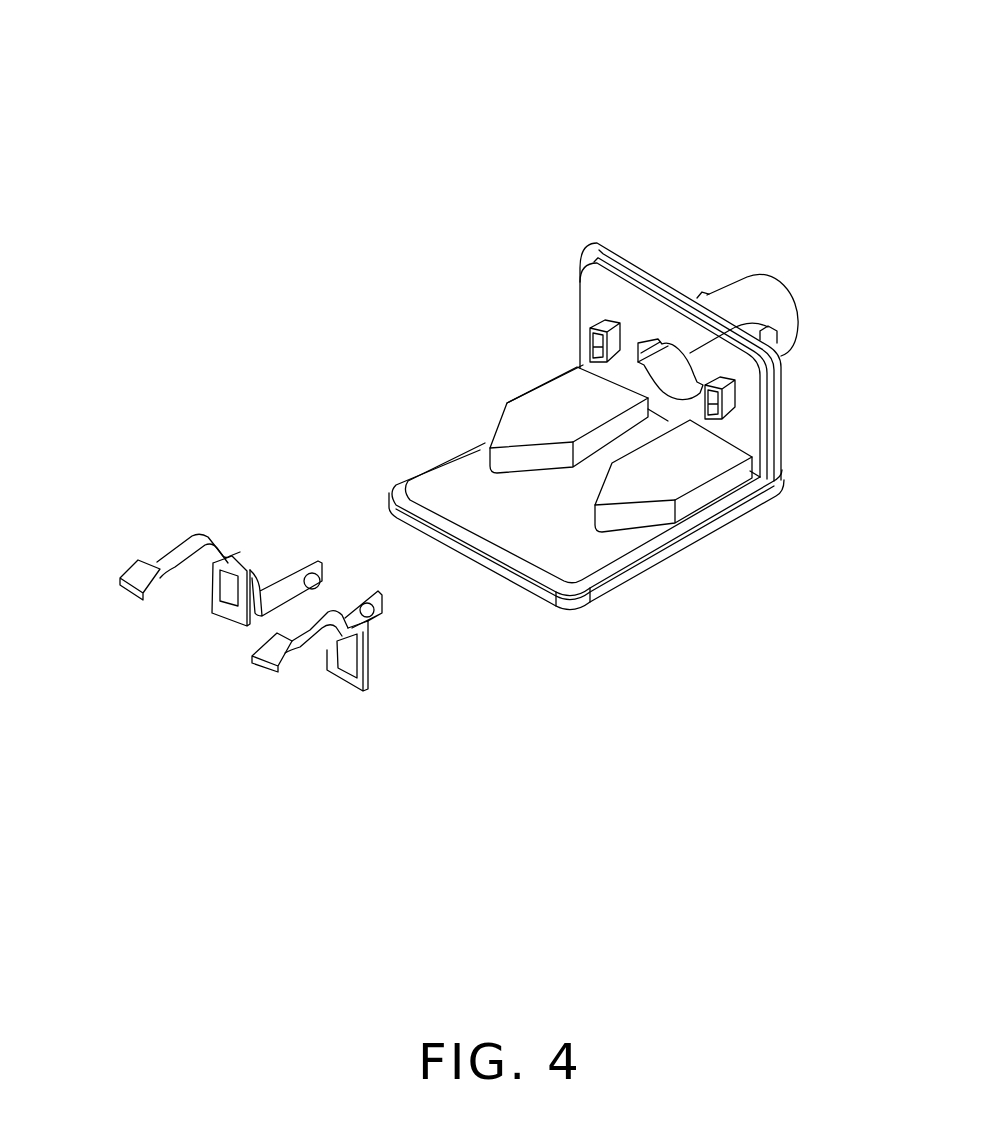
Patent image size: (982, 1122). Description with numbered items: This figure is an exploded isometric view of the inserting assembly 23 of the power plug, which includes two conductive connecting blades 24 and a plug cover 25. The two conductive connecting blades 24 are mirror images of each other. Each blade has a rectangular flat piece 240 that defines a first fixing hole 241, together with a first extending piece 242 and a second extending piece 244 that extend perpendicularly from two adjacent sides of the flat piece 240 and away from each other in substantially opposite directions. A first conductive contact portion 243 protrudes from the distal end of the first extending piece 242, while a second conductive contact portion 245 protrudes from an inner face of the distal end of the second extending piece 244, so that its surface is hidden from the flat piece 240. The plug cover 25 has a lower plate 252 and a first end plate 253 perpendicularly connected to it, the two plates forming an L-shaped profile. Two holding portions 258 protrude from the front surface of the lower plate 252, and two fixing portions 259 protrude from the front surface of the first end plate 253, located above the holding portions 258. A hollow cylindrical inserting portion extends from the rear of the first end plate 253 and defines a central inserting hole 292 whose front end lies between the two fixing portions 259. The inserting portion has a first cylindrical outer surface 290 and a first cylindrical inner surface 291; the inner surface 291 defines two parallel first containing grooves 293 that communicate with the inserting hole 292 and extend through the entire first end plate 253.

The inserting assembly 23 is at (424, 108).
The conductive connecting blade 24 is at (163, 605).
The flat piece 240 is at (228, 606).
The first fixing hole 241 is at (233, 578).
The first extending piece 242 is at (184, 548).
The first conductive contact portion 243 is at (143, 562).
The second extending piece 244 is at (285, 592).
The second conductive contact portion 245 is at (311, 573).
The plug cover 25 is at (581, 241).
The lower plate 252 is at (530, 545).
The first end plate 253 is at (633, 308).
The holding portion 258 is at (622, 497).
The fixing portion 259 is at (600, 324).
The first cylindrical outer surface 290 is at (758, 290).
The first cylindrical inner surface 291 is at (690, 353).
The inserting hole 292 is at (666, 380).
The first containing groove 293 is at (700, 381).